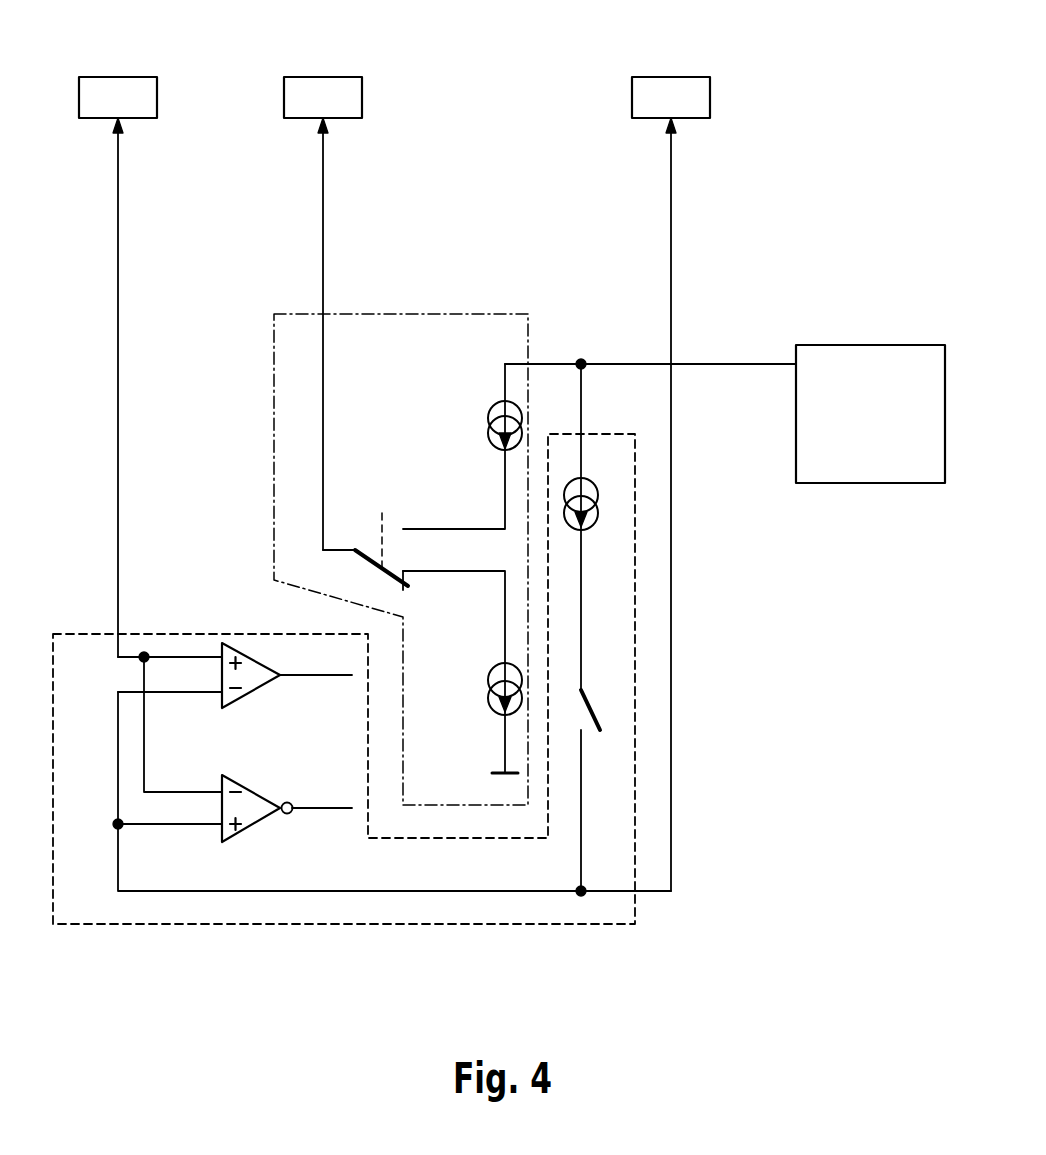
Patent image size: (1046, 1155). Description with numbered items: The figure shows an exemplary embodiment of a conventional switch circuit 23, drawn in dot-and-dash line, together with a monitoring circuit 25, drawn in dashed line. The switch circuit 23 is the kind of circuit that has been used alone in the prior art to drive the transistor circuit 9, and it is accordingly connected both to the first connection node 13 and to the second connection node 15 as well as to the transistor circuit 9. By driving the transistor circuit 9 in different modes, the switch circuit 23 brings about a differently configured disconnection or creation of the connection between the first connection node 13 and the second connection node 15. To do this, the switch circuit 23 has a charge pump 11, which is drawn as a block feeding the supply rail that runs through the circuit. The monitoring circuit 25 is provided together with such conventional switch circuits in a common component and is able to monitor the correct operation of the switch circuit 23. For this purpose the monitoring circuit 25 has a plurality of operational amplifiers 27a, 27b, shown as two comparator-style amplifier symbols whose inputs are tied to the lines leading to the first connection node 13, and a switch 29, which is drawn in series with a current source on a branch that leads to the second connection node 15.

The first connection node 13 is at (119, 86).
The transistor circuit 9 is at (323, 86).
The second connection node 15 is at (671, 86).
The charge pump 11 is at (888, 429).
The switch circuit 23 is at (441, 313).
The monitoring circuit 25 is at (176, 633).
The operational amplifier 27a is at (253, 693).
The operational amplifier 27b is at (253, 826).
The switch 29 is at (592, 737).